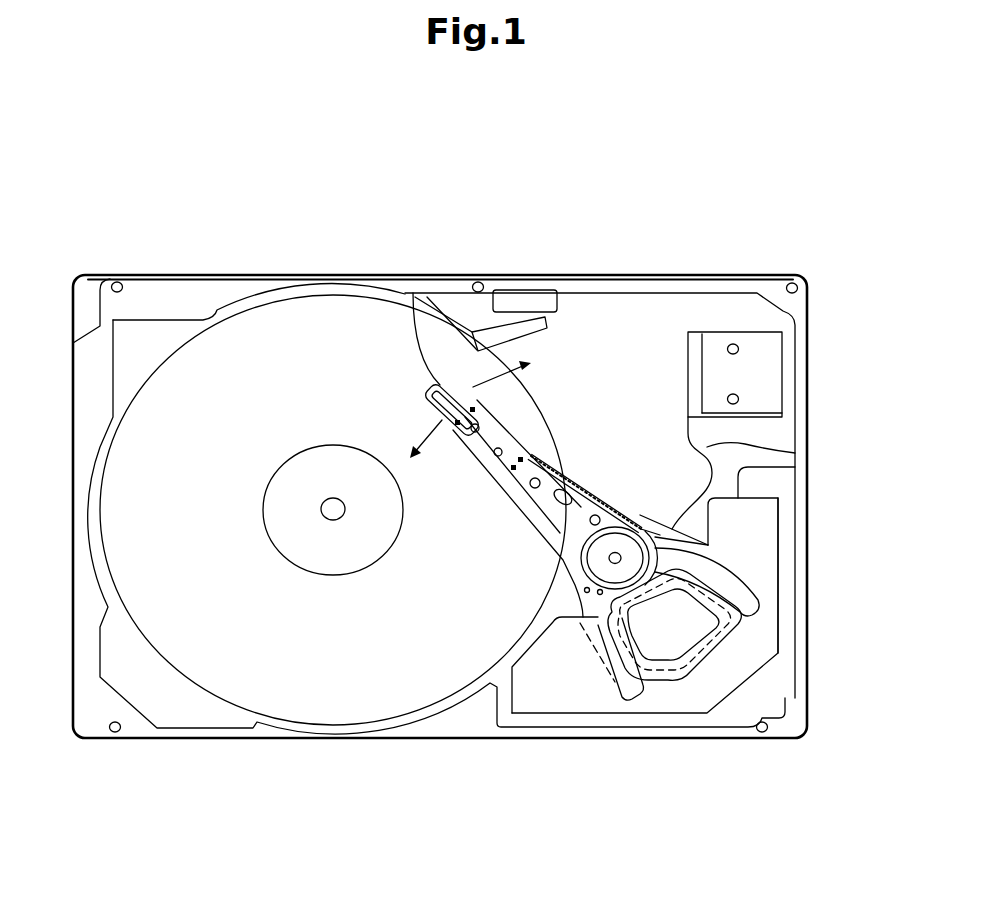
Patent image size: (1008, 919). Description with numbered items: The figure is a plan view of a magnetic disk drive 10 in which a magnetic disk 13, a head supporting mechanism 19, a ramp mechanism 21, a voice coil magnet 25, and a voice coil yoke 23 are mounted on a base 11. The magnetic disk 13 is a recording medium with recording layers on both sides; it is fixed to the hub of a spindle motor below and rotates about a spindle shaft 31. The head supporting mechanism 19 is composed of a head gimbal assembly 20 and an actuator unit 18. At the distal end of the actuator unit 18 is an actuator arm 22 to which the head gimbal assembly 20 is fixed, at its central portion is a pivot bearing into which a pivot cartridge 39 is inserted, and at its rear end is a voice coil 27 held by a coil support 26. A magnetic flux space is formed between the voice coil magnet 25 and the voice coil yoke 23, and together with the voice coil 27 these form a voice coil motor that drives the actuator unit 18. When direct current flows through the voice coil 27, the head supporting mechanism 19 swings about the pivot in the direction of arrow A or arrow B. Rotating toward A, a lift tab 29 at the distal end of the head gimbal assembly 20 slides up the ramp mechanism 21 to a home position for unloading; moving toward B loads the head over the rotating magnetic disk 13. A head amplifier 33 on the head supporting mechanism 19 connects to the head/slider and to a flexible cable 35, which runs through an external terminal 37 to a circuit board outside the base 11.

The magnetic disk drive 10 is at (346, 266).
The base 11 is at (652, 315).
The magnetic disk 13 is at (340, 650).
The actuator unit 18 is at (545, 535).
The head supporting mechanism 19 is at (503, 517).
The head gimbal assembly 20 is at (468, 466).
The ramp mechanism 21 is at (520, 290).
The actuator arm 22 is at (545, 463).
The voice coil yoke 23 is at (755, 513).
The voice coil magnet 25 is at (783, 491).
The coil support 26 is at (612, 684).
The voice coil 27 is at (676, 660).
The lift tab 29 is at (440, 385).
The spindle shaft 31 is at (320, 504).
The head amplifier 33 is at (610, 505).
The flexible cable 35 is at (760, 447).
The external terminal 37 is at (765, 378).
The pivot cartridge 39 is at (622, 556).